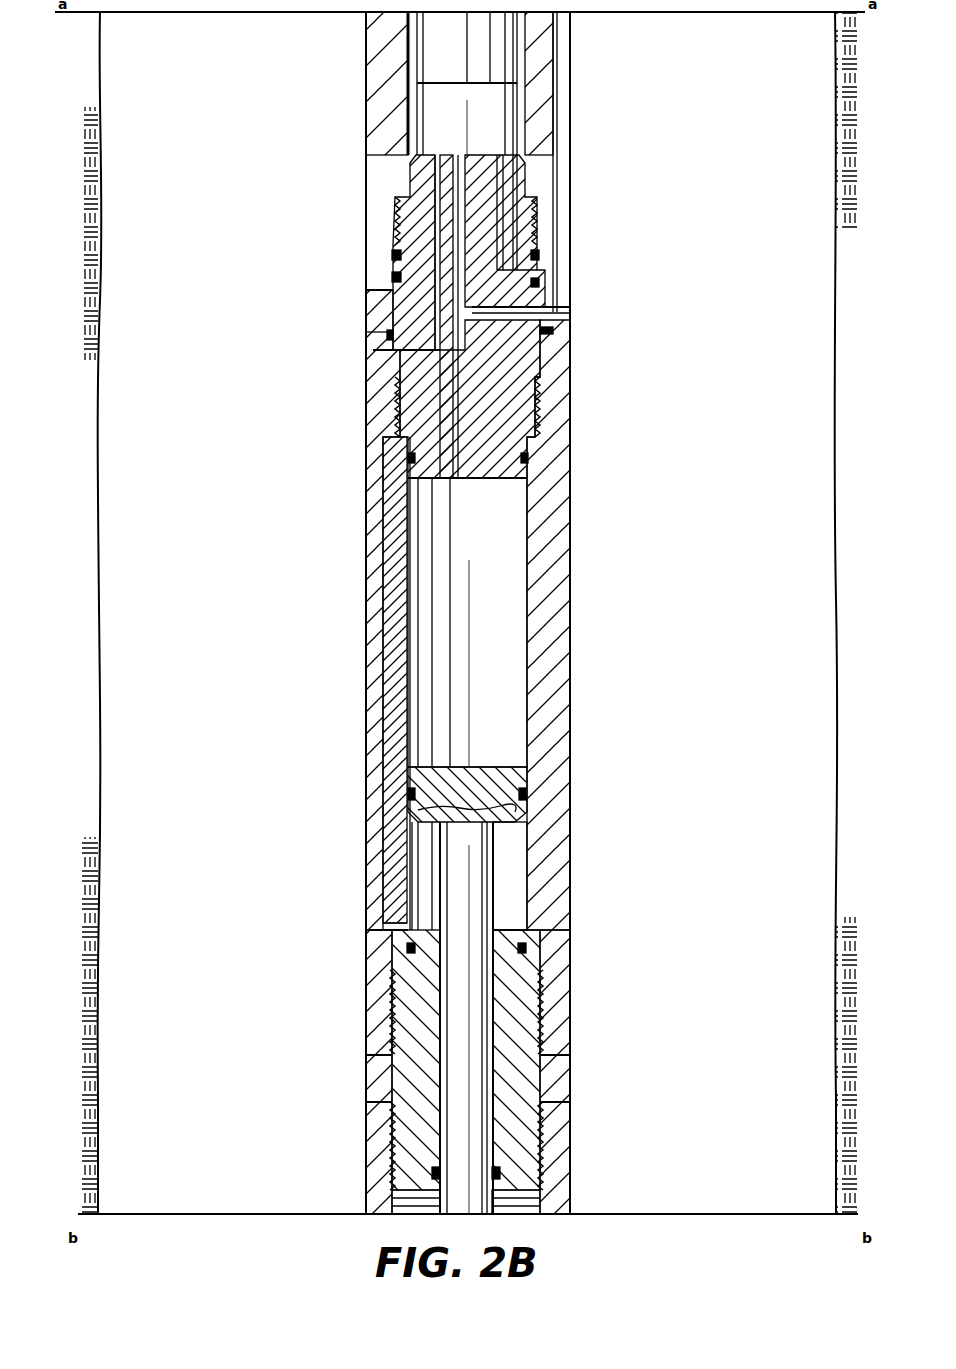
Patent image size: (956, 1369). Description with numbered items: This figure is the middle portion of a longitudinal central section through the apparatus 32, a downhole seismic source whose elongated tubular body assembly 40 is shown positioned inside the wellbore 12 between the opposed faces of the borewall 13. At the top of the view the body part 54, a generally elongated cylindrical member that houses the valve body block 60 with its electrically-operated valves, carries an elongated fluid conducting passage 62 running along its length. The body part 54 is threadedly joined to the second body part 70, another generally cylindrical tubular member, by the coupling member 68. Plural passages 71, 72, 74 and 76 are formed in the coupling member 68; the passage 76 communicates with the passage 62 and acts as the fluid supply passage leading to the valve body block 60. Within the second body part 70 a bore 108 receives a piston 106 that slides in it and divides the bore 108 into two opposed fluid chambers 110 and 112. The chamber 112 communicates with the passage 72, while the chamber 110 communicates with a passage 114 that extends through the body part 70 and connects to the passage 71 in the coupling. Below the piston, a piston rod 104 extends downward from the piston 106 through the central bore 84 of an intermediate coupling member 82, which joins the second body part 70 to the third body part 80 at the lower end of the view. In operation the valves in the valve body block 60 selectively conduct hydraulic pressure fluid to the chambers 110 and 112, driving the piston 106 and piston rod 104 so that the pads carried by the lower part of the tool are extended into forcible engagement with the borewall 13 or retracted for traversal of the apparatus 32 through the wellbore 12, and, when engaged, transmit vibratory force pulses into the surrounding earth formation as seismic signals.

The wellbore 12 is at (104, 950).
The borewall 13 is at (98, 812).
The apparatus 32 is at (585, 690).
The elongated tubular body assembly 40 is at (580, 446).
The body part 54 is at (571, 121).
The valve body block 60 is at (417, 24).
The fluid conducting passage 62 is at (559, 88).
The coupling member 68 is at (560, 310).
The second body part 70 is at (572, 515).
The passage 71 is at (432, 182).
The passage 72 is at (397, 205).
The passage 74 is at (553, 335).
The passage 76 is at (500, 238).
The third body part 80 is at (571, 1172).
The intermediate coupling member 82 is at (571, 1090).
The central bore 84 is at (480, 1050).
The piston rod 104 is at (445, 1070).
The piston 106 is at (513, 850).
The bore 108 is at (410, 862).
The fluid chamber 110 is at (515, 893).
The fluid chamber 112 is at (484, 535).
The passage 114 is at (381, 693).